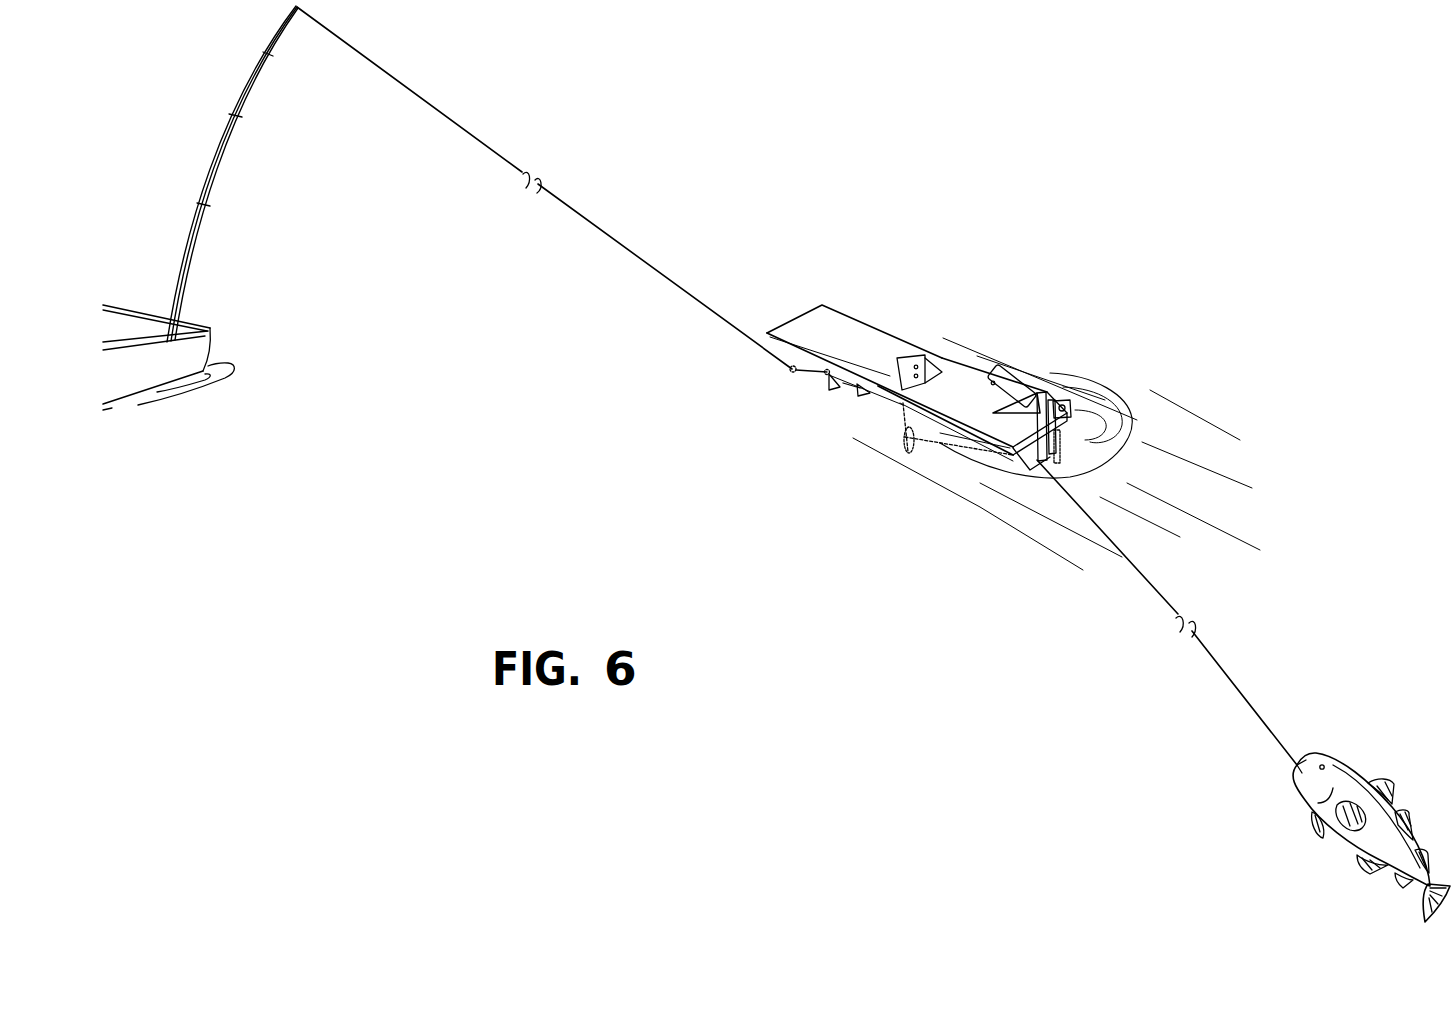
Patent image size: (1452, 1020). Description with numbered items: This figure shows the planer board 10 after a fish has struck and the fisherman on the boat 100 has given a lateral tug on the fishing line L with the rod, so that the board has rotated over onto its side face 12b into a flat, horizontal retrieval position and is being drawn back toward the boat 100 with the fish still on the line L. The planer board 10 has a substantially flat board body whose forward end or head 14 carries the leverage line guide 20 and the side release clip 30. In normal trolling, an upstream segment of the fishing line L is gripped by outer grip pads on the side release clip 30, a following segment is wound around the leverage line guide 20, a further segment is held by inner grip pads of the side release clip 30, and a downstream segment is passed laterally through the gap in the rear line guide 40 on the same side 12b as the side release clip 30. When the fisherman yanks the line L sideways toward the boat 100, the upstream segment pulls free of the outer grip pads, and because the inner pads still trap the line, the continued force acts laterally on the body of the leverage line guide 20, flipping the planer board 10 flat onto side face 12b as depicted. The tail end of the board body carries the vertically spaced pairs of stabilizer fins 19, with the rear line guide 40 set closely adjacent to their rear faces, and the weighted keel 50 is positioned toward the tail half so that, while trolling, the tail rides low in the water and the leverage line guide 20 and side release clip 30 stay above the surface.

The boat 100 is at (145, 311).
The fishing line L is at (463, 132).
The planer board 10 is at (895, 291).
The head 14 is at (807, 323).
The leverage line guide 20 is at (791, 379).
The side release clip 30 is at (908, 463).
The side face 12b is at (961, 393).
The weighted keel 50 is at (1013, 390).
The stabilizer fins 19 is at (1033, 397).
The rear line guide 40 is at (1088, 414).